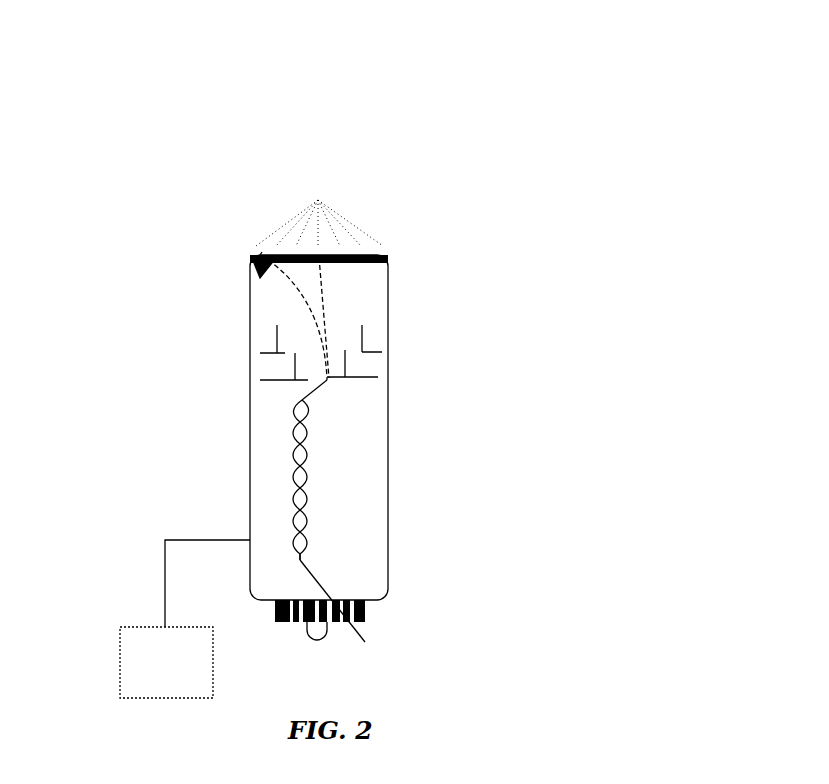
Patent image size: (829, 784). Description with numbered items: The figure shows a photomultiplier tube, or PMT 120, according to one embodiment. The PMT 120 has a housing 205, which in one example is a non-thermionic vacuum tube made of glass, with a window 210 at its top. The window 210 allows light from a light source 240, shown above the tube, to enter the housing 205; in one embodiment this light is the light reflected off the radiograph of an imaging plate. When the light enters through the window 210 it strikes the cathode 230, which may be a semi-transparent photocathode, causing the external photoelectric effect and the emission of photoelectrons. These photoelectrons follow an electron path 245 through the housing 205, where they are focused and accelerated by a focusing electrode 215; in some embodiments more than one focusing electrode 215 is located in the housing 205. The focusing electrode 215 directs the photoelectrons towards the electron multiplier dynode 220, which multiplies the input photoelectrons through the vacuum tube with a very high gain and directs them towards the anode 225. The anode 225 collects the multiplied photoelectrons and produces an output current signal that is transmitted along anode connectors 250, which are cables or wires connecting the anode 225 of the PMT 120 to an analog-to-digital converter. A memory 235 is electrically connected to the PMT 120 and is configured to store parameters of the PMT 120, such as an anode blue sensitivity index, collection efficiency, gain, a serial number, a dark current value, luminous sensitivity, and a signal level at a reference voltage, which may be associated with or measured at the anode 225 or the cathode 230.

The PMT 120 is at (333, 93).
The housing 205 is at (230, 391).
The window 210 is at (252, 250).
The focusing electrode 215 is at (379, 370).
The electron multiplier dynode 220 is at (275, 516).
The anode 225 is at (346, 622).
The cathode 230 is at (252, 272).
The memory 235 is at (108, 672).
The light source 240 is at (398, 186).
The electron path 245 is at (338, 294).
The anode connectors 250 is at (380, 608).